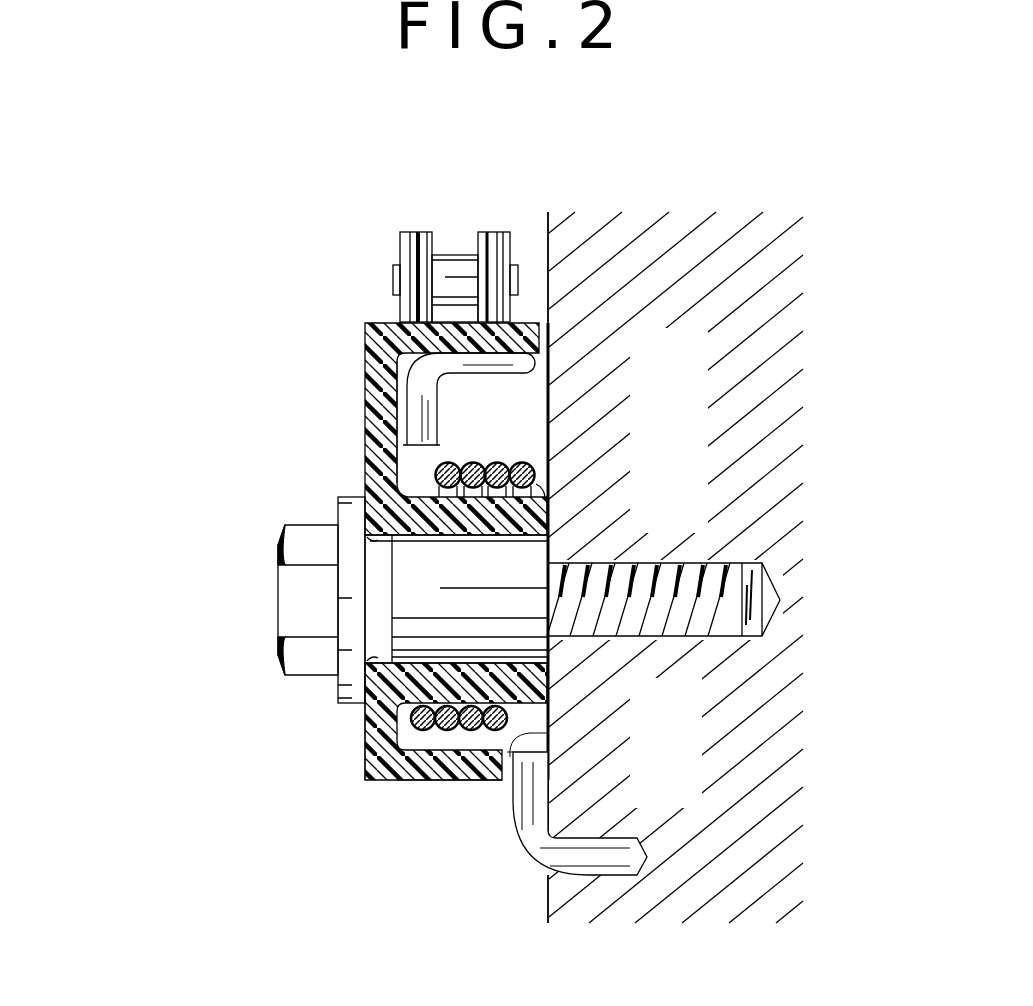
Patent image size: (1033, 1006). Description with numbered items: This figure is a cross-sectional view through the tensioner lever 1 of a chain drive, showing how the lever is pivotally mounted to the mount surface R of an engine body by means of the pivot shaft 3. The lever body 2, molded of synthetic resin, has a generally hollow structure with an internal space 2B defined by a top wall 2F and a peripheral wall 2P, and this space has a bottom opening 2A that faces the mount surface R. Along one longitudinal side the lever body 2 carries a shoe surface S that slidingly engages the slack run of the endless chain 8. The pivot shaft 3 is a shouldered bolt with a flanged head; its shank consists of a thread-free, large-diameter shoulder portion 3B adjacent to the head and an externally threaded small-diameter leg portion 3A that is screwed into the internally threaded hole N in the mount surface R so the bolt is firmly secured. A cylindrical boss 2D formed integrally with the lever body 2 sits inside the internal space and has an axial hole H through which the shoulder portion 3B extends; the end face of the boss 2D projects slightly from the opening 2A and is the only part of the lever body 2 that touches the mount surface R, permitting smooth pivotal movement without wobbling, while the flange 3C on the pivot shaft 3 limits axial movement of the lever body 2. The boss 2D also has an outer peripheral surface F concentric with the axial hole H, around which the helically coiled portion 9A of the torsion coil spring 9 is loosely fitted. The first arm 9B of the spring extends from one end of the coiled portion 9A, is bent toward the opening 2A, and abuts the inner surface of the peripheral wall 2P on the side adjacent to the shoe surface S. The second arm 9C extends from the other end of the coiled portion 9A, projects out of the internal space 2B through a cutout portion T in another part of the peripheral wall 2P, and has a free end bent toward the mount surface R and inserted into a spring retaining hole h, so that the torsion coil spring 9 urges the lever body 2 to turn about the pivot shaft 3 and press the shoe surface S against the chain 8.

The tensioner lever 1 is at (476, 552).
The lever body 2 is at (385, 597).
The bottom opening 2A is at (548, 383).
The internal space 2B is at (468, 428).
The cylindrical boss 2D is at (540, 680).
The top wall 2F is at (370, 727).
The peripheral wall 2P is at (418, 780).
The pivot shaft 3 is at (505, 620).
The externally threaded leg portion 3A is at (705, 615).
The shoulder portion 3B is at (520, 565).
The flange 3C is at (340, 684).
The endless chain 8 is at (453, 257).
The torsion coil spring 9 is at (457, 618).
The helically coiled portion 9A is at (498, 455).
The first arm 9B is at (405, 440).
The second arm 9C is at (515, 822).
The outer peripheral surface F is at (548, 479).
The axial hole H is at (417, 535).
The internally threaded hole N is at (753, 562).
The mount surface R is at (548, 245).
The shoe surface S is at (375, 322).
The cutout portion T is at (548, 733).
The spring retaining hole h is at (620, 840).